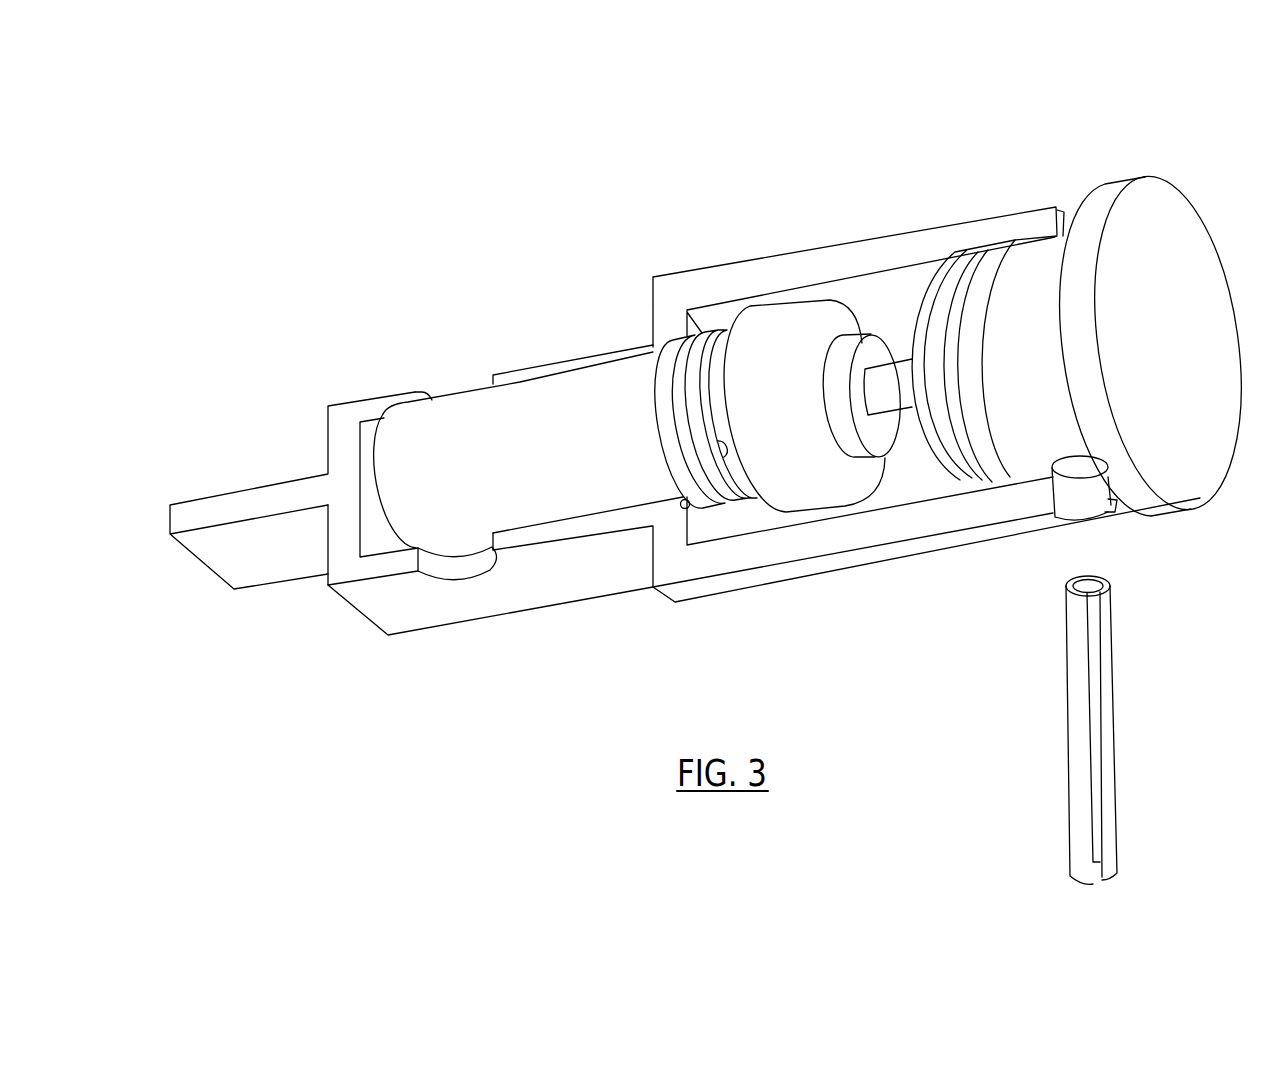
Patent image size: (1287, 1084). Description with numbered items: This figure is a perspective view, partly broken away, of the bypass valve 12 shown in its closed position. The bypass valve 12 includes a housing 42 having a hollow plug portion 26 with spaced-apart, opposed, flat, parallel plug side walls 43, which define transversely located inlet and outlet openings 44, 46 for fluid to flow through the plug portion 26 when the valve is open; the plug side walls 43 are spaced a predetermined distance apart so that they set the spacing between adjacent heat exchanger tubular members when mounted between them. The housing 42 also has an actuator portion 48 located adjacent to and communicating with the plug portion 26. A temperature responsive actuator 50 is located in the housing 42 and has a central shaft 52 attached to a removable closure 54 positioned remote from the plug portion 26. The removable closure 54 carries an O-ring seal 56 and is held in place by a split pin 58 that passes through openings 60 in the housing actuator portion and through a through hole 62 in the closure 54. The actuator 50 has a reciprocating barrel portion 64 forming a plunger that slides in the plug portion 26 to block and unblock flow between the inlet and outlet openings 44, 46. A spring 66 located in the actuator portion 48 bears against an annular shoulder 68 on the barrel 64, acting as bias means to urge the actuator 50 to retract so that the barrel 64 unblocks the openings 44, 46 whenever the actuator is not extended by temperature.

The bypass valve 12 is at (1152, 113).
The hollow plug portion 26 is at (584, 362).
The housing 42 is at (195, 515).
The plug side walls 43 is at (397, 397).
The inlet opening 44 is at (458, 383).
The outlet opening 46 is at (453, 565).
The actuator portion 48 is at (800, 252).
The temperature responsive actuator 50 is at (534, 395).
The central shaft 52 is at (904, 403).
The removable closure 54 is at (1044, 375).
The O-ring seal 56 is at (995, 235).
The split pin 58 is at (1115, 735).
The openings 60 is at (1066, 212).
The through hole 62 is at (1078, 464).
The barrel portion 64 is at (598, 458).
The spring 66 is at (661, 384).
The annular shoulder 68 is at (719, 446).